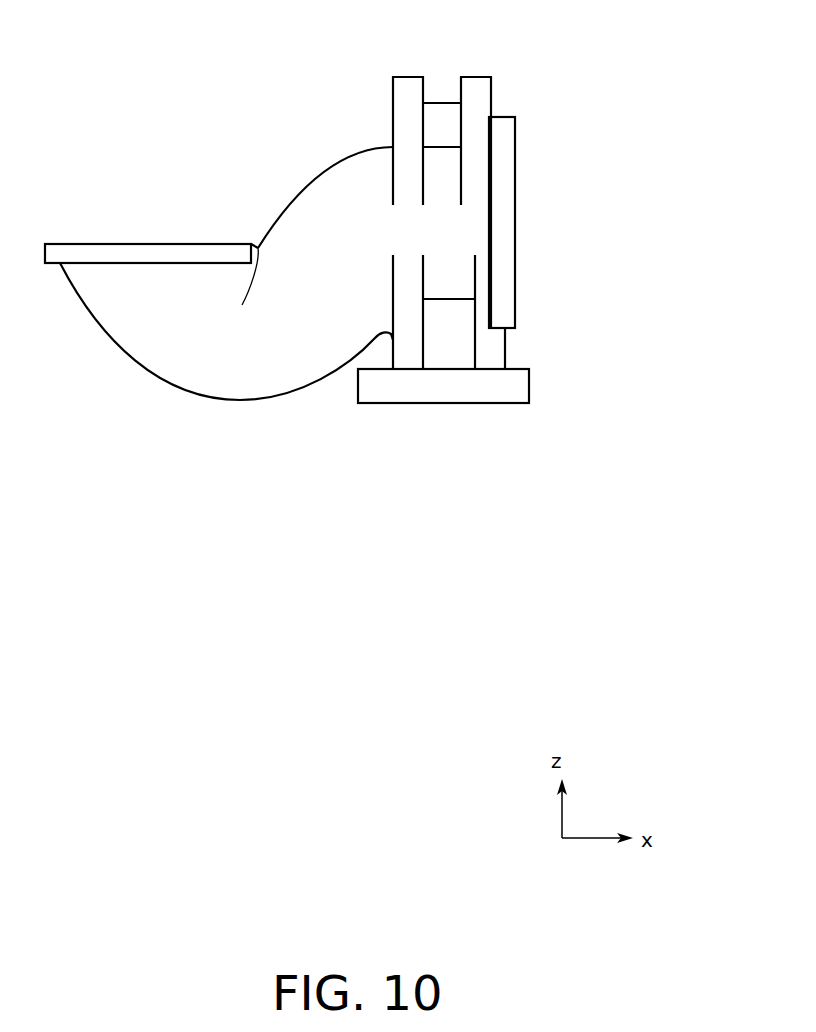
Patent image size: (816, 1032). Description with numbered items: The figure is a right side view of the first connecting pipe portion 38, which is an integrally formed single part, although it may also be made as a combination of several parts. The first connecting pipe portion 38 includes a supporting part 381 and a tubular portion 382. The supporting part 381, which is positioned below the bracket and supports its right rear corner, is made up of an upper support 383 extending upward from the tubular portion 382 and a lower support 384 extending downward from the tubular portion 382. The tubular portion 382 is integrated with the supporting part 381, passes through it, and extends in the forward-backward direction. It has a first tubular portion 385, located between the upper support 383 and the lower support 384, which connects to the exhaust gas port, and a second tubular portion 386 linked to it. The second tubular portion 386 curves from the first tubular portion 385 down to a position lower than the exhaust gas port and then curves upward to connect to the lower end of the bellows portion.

The first connecting pipe portion 38 is at (268, 110).
The supporting part 381 is at (633, 110).
The tubular portion 382 is at (430, 520).
The upper support 383 is at (477, 100).
The lower support 384 is at (496, 355).
The first tubular portion 385 is at (445, 228).
The second tubular portion 386 is at (262, 380).